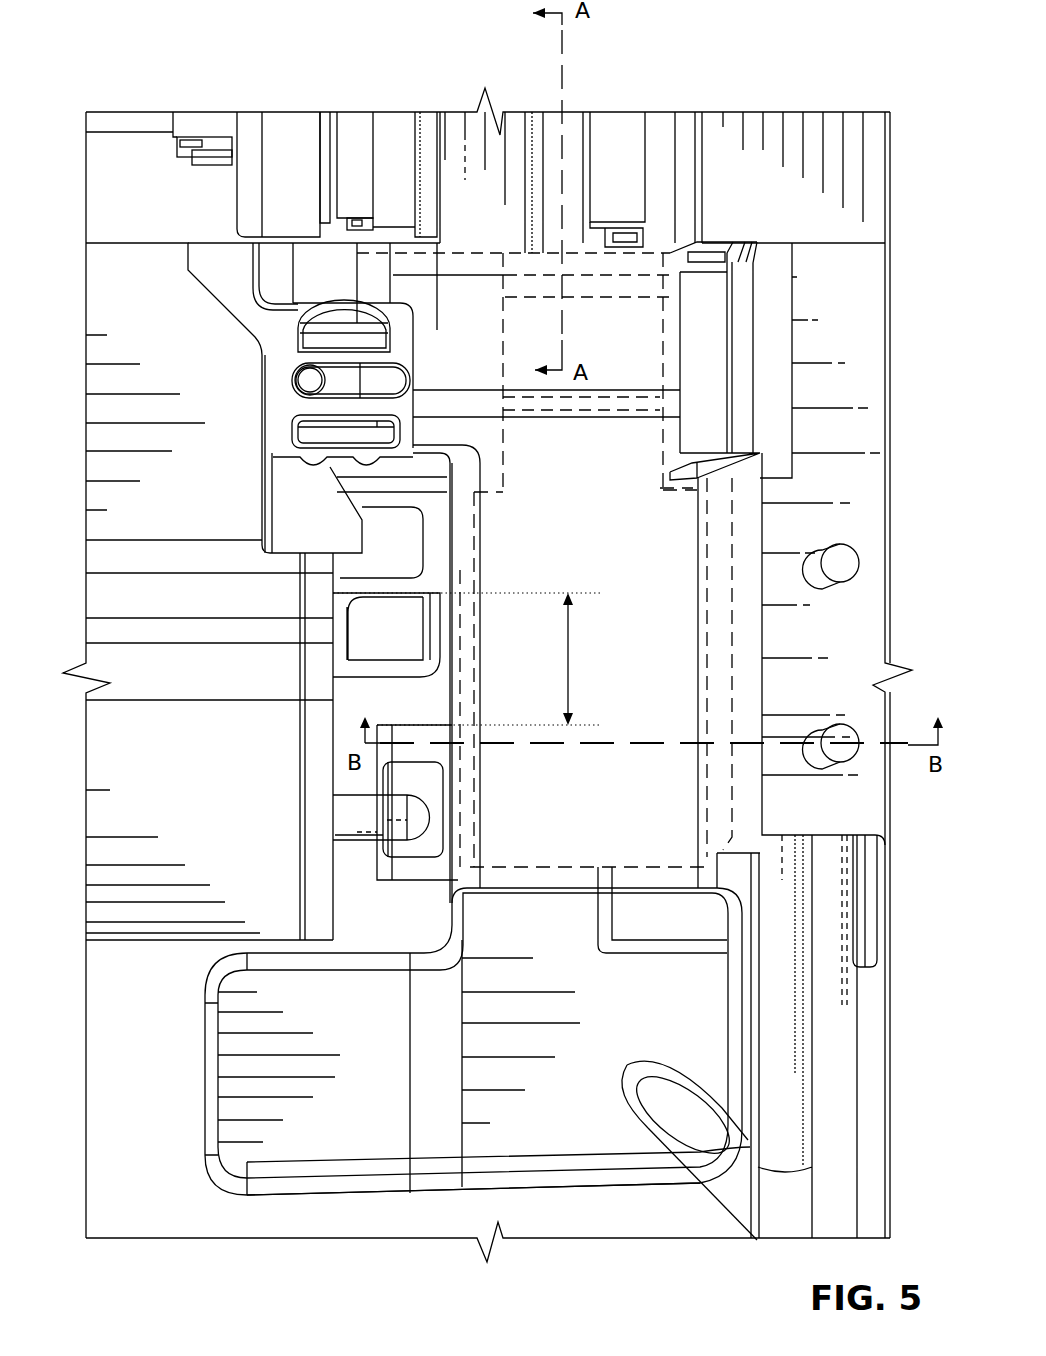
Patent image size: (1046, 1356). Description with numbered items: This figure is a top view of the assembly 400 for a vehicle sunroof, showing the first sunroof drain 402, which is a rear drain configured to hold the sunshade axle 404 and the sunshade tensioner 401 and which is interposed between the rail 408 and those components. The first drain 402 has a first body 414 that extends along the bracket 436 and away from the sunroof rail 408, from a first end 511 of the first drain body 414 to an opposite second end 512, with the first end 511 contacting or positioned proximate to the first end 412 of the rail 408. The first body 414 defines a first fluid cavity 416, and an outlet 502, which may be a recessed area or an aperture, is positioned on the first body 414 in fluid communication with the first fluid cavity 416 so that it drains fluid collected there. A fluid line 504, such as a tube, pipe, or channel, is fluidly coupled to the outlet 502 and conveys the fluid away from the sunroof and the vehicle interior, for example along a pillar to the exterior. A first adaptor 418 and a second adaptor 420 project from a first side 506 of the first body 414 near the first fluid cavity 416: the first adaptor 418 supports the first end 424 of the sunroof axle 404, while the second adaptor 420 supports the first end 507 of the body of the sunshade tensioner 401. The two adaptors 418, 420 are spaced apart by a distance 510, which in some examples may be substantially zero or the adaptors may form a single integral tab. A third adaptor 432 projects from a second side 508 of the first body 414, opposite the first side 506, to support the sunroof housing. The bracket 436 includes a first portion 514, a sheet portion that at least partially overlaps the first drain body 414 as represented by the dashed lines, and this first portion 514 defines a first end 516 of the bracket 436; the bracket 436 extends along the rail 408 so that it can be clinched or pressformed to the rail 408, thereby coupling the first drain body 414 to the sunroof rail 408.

The assembly 400 is at (83, 109).
The sunshade tensioner 401 is at (402, 651).
The first sunroof drain 402 is at (500, 1195).
The sunshade axle 404 is at (357, 842).
The rail 408 is at (493, 226).
The first end of the rail 412 is at (477, 253).
The first body 414 is at (205, 1040).
The first fluid cavity 416 is at (474, 938).
The first adaptor 418 is at (430, 725).
The second adaptor 420 is at (410, 593).
The first end of the sunroof axle 424 is at (432, 820).
The third adaptor 432 is at (880, 843).
The bracket 436 is at (503, 353).
The outlet 502 is at (627, 1069).
The fluid line 504 is at (720, 1203).
The first side of the first body 506 is at (447, 695).
The first end of the body of the sunshade tensioner 507 is at (440, 650).
The second side of the first body 508 is at (762, 637).
The distance 510 is at (570, 665).
The first end of the first drain body 511 is at (672, 248).
The second end of the first drain body 512 is at (577, 1187).
The first portion of the bracket 514 is at (503, 472).
The first end of the bracket 516 is at (533, 867).